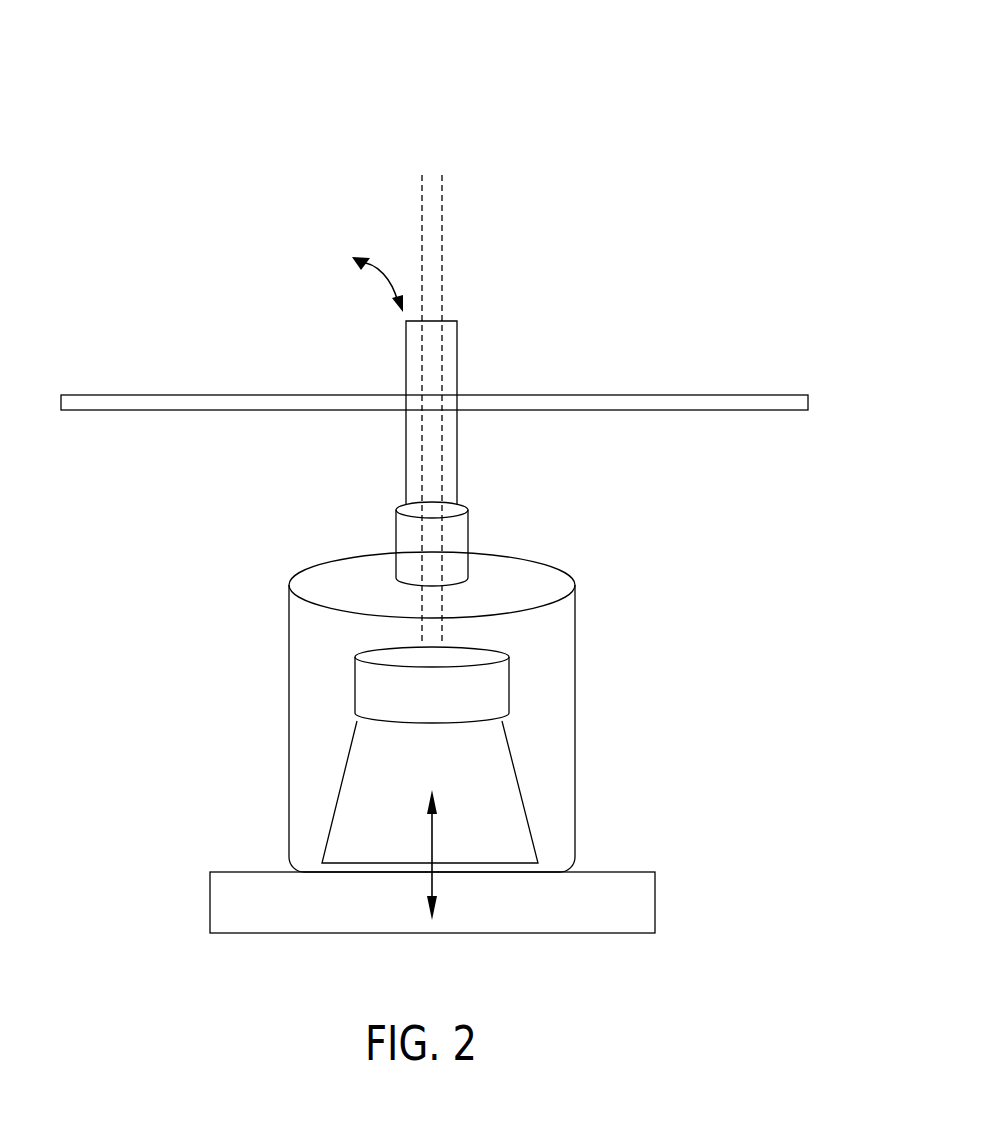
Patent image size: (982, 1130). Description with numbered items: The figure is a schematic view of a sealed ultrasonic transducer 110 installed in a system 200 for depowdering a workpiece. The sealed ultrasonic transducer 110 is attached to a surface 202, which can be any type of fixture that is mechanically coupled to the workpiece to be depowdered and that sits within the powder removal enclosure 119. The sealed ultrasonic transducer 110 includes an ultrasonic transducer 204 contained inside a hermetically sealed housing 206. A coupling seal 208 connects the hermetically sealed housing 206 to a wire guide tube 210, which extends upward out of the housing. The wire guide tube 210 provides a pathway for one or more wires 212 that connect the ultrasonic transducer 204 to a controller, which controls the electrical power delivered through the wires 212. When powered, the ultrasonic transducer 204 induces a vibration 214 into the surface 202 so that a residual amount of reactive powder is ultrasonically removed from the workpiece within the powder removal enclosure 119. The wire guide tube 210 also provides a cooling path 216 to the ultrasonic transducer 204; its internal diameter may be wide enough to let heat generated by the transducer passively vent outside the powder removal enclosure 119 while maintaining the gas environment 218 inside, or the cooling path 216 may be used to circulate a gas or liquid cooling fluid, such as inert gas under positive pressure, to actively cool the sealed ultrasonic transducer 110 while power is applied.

The system 200 is at (540, 89).
The powder removal enclosure 119 is at (111, 395).
The wires 212 is at (422, 200).
The cooling path 216 is at (380, 273).
The wire guide tube 210 is at (458, 440).
The coupling seal 208 is at (394, 530).
The hermetically sealed housing 206 is at (289, 715).
The ultrasonic transducer 204 is at (509, 680).
The surface 202 is at (210, 903).
The vibration 214 is at (432, 882).
The gas environment 218 is at (148, 510).
The sealed ultrasonic transducer 110 is at (640, 552).